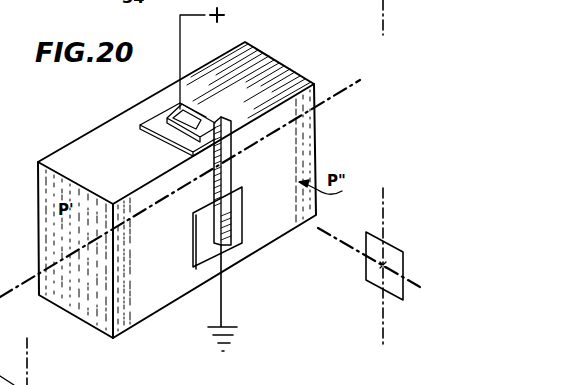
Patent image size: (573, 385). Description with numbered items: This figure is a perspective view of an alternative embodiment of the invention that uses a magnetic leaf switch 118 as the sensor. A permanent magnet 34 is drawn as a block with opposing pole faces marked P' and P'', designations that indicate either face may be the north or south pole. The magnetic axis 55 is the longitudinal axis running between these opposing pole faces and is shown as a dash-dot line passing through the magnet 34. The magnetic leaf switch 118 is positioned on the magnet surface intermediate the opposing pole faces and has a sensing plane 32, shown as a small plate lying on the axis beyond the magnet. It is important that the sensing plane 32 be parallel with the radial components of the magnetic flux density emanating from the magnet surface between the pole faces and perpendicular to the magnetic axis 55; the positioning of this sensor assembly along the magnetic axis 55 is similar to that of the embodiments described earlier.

The permanent magnet 34 is at (167, 290).
The magnetic axis 55 is at (338, 92).
The magnetic leaf switch 118 is at (240, 163).
The sensing plane 32 is at (373, 268).